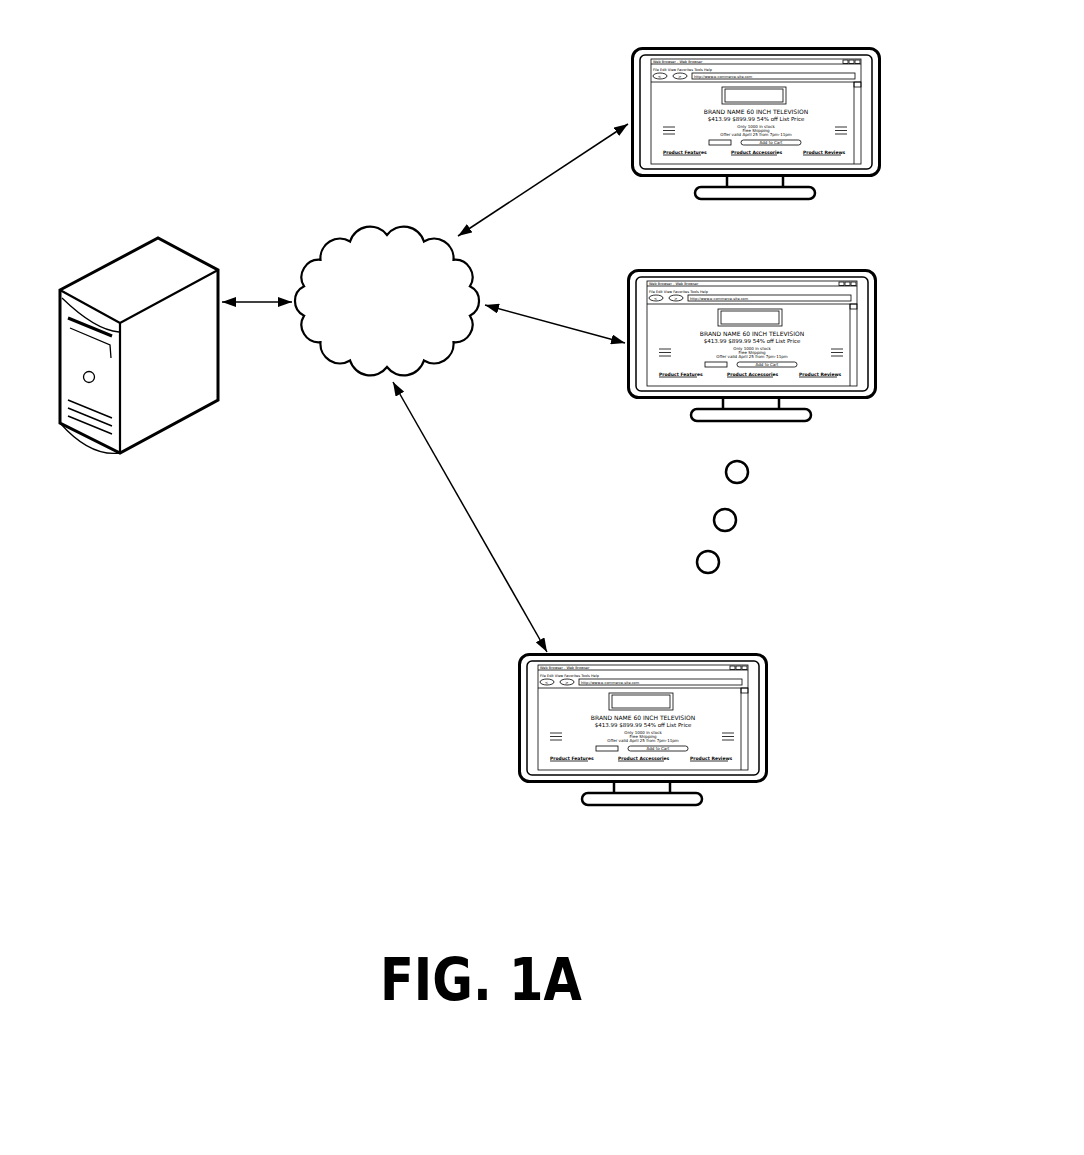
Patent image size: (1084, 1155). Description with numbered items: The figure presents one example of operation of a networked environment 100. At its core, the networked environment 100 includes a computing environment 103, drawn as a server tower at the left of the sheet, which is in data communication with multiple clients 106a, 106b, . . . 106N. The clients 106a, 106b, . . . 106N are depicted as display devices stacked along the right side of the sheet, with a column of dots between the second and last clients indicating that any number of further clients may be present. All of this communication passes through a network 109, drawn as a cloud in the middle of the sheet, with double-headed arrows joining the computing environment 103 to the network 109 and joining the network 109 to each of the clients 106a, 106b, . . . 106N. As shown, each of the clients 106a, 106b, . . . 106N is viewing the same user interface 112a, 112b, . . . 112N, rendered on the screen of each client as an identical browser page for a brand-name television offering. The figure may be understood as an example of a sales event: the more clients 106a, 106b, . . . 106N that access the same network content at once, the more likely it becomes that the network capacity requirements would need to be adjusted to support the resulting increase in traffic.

The networked environment 100 is at (308, 673).
The computing environment 103 is at (92, 270).
The client 106a is at (799, 101).
The client 106b is at (795, 322).
The client 106N is at (688, 706).
The network 109 is at (387, 301).
The user interface 112a is at (820, 65).
The user interface 112b is at (818, 290).
The user interface 112N is at (690, 672).